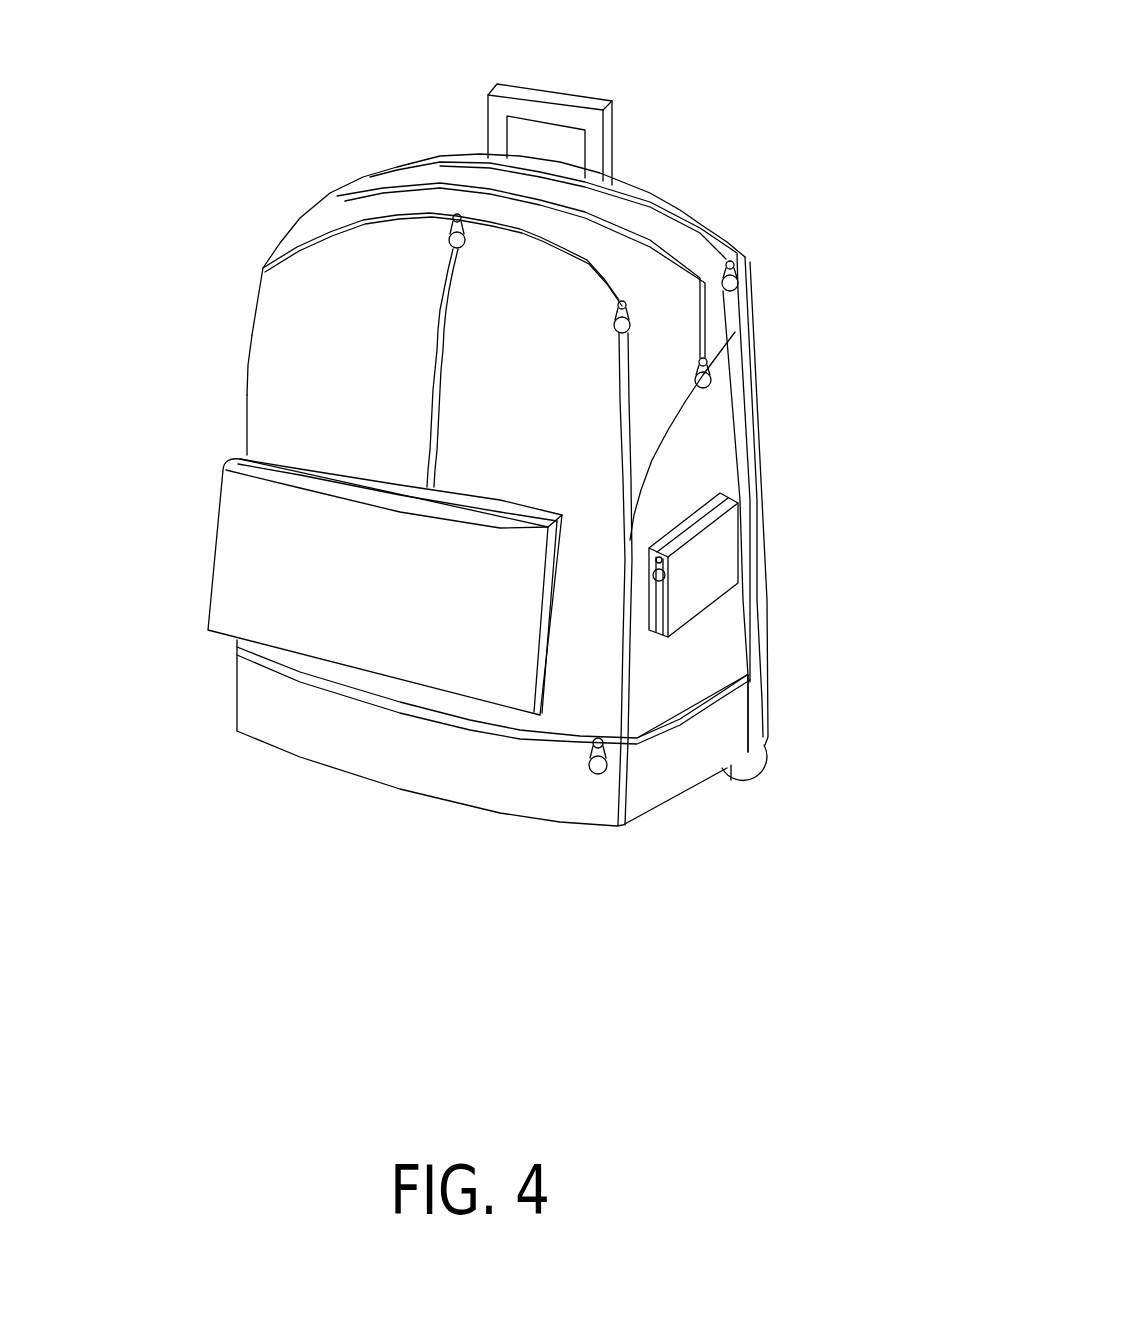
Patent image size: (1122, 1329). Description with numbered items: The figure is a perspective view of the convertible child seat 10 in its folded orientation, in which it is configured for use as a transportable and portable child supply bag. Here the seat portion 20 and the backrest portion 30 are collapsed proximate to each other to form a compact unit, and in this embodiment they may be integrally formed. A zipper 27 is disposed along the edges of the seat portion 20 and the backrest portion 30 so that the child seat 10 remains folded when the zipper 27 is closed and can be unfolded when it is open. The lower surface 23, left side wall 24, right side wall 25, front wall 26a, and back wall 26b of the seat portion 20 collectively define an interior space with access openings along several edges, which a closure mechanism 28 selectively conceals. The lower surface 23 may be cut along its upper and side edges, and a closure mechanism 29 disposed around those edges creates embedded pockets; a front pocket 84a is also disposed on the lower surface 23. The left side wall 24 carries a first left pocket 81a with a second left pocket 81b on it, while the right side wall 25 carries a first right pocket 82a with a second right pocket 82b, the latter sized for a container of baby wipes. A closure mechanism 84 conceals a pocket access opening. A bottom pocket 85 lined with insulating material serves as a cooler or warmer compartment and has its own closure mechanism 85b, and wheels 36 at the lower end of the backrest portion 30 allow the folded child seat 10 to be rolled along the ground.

The convertible child seat 10 is at (698, 98).
The front wall 26a is at (432, 202).
The closure mechanism 29 is at (437, 217).
The zipper 27 is at (658, 215).
The closure mechanism 28 is at (658, 253).
The left side wall 24 is at (263, 268).
The first left pocket 81a is at (250, 327).
The second left pocket 81b is at (247, 397).
The seat portion 20 is at (222, 426).
The lower surface 23 is at (315, 450).
The front pocket 84a is at (260, 522).
The backrest portion 30 is at (780, 333).
The first right pocket 82a is at (710, 440).
The closure mechanism 84 is at (733, 503).
The second right pocket 82b is at (710, 580).
The right side wall 25 is at (713, 668).
The wheels 36 is at (747, 765).
The bottom pocket 85 is at (293, 742).
The closure mechanism 85b is at (560, 743).
The back wall 26b is at (690, 794).